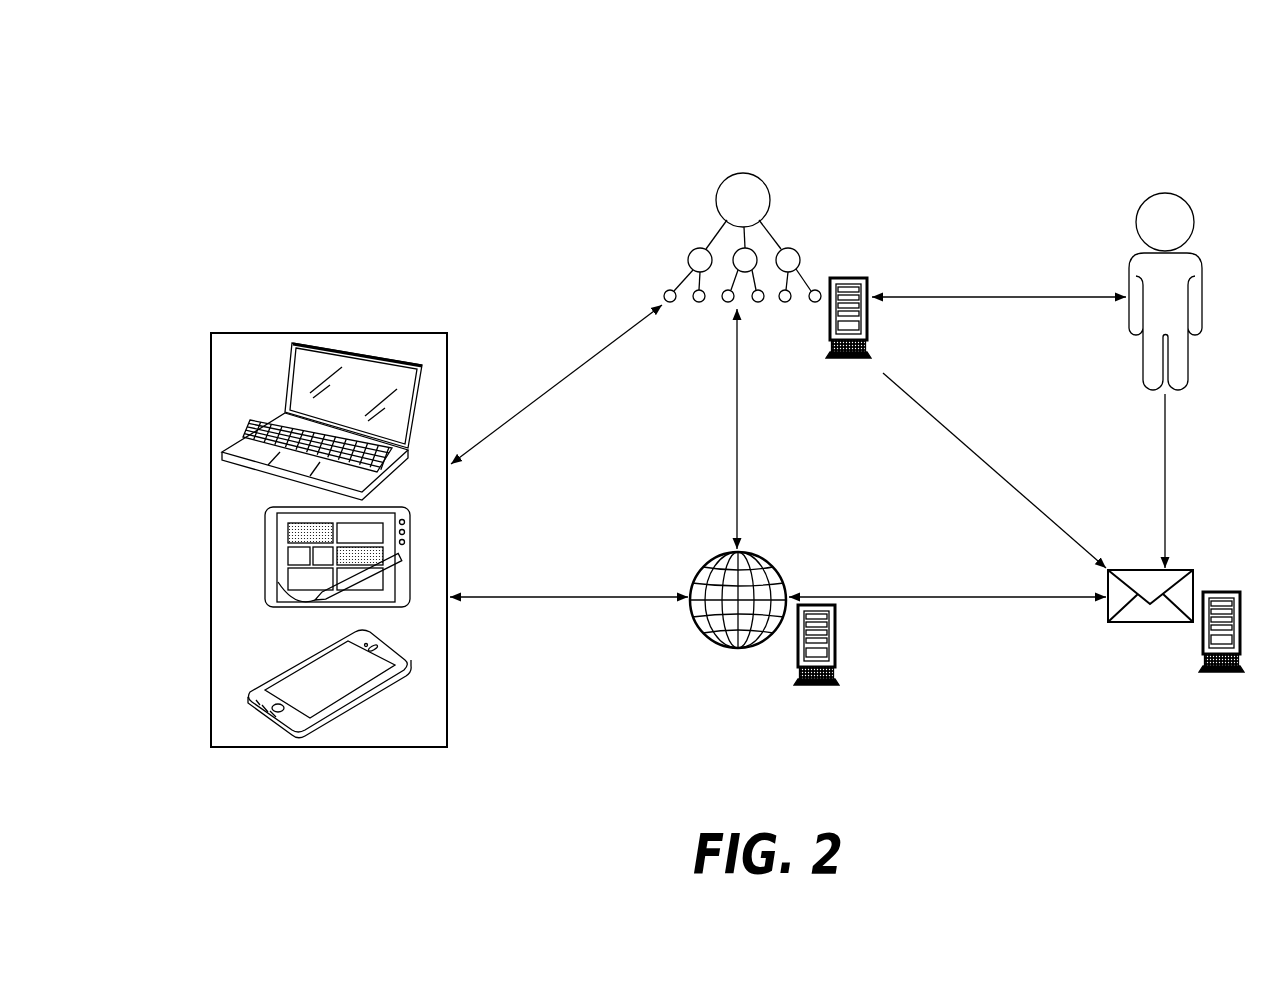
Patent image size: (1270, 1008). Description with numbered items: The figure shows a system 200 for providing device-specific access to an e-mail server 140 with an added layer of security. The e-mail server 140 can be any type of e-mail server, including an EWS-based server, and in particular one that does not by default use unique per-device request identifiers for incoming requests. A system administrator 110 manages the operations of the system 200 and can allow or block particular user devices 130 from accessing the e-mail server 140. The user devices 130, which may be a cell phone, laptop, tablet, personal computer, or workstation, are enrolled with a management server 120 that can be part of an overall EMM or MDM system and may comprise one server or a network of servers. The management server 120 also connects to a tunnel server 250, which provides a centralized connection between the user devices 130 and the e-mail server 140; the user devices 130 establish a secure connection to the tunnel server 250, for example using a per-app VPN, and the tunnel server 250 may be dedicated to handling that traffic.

The system 200 is at (872, 104).
The system administrator 110 is at (1212, 185).
The management server 120 is at (770, 190).
The user devices 130 is at (211, 450).
The e-mail server 140 is at (1180, 570).
The tunnel server 250 is at (770, 562).